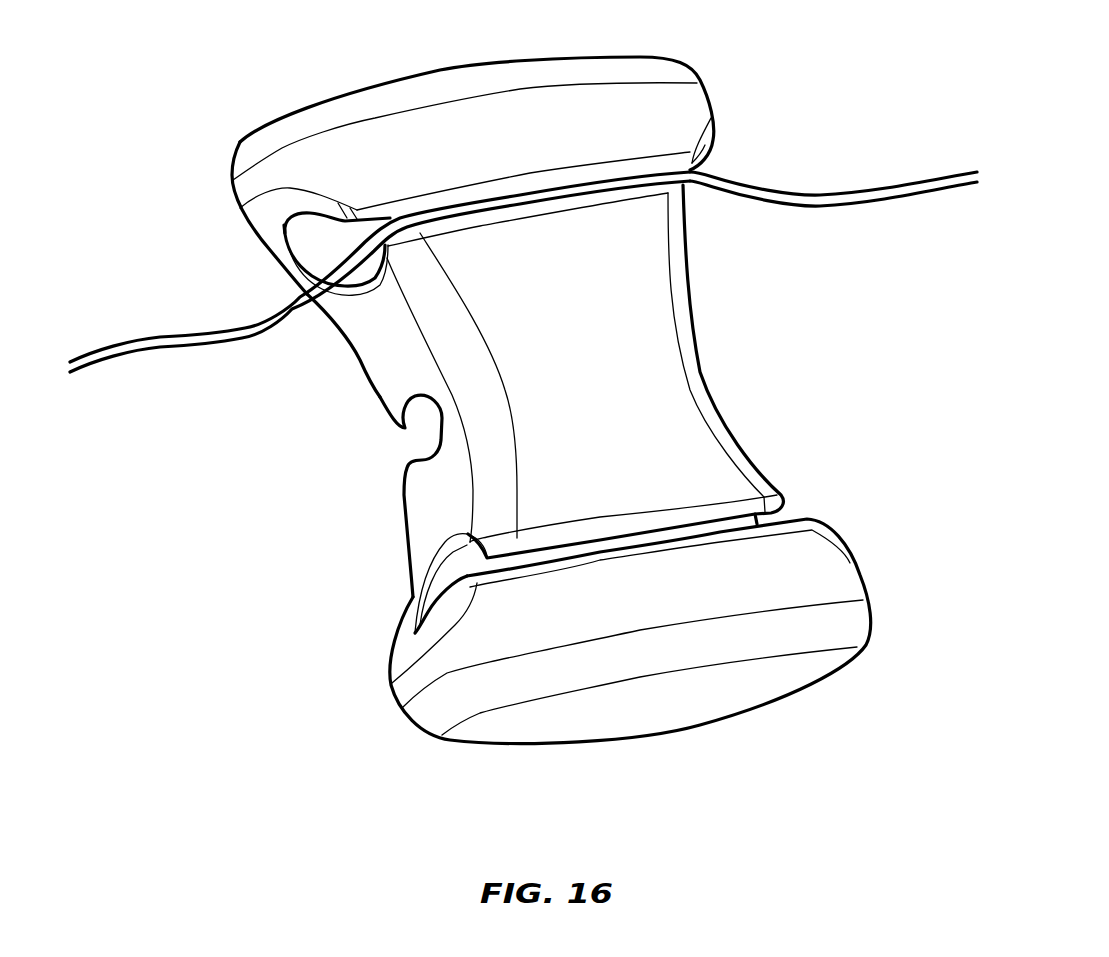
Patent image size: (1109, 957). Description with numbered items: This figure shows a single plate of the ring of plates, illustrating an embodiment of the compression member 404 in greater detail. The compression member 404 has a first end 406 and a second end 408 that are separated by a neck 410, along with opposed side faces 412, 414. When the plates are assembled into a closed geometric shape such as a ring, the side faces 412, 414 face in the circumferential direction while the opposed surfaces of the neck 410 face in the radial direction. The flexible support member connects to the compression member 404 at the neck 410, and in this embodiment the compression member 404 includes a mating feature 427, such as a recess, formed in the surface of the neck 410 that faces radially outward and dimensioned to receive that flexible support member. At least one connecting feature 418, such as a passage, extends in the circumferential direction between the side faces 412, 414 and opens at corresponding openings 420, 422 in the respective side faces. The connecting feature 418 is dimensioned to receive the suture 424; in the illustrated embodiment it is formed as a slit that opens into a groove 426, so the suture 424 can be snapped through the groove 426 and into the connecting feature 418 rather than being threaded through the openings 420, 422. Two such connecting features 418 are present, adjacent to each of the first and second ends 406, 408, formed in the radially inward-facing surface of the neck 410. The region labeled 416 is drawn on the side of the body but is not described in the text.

The compression member 404 is at (369, 785).
The first end 406 is at (697, 87).
The second end 408 is at (870, 640).
The neck 410 is at (607, 372).
The side face 412 is at (372, 380).
The side face 414 is at (687, 290).
The side face of body 416 is at (687, 447).
The connecting feature 418 is at (388, 227).
The opening 420 is at (320, 238).
The opening 422 is at (700, 168).
The suture 424 is at (887, 190).
The groove 426 is at (530, 173).
The mating feature 427 is at (423, 438).